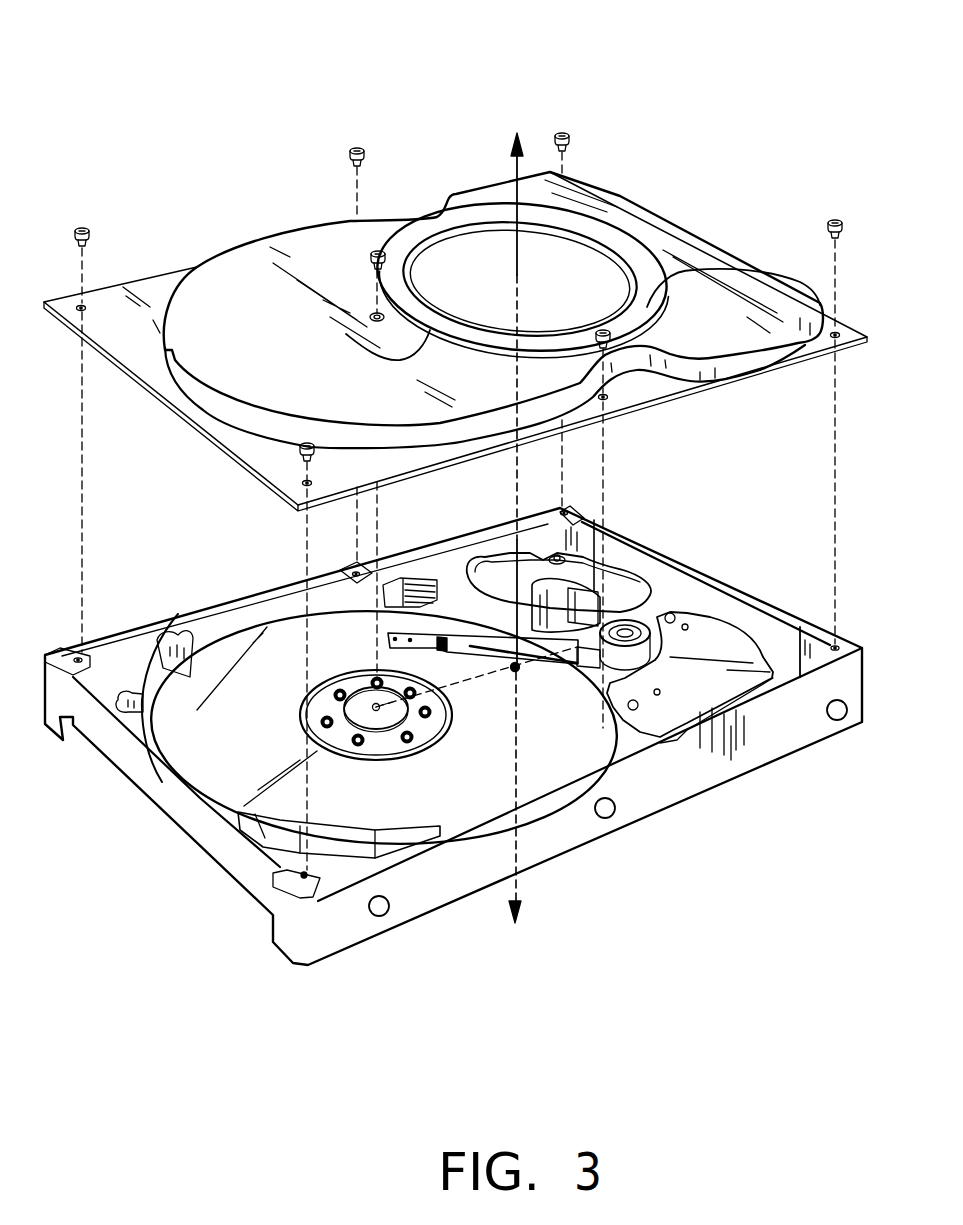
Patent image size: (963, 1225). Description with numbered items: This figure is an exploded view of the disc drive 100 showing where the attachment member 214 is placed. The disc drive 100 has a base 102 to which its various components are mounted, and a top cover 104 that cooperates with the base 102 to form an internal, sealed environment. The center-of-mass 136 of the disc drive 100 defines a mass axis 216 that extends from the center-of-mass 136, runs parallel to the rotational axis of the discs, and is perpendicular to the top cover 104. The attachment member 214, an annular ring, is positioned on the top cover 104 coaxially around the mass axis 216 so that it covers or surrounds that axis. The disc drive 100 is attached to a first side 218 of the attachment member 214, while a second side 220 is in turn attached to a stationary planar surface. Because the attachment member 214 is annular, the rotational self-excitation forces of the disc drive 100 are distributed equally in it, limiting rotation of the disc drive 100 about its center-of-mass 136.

The disc drive 100 is at (736, 102).
The base 102 is at (660, 608).
The top cover 104 is at (160, 295).
The center-of-mass 136 is at (520, 670).
The attachment member 214 is at (605, 236).
The mass axis 216 is at (514, 168).
The first side 218 is at (373, 350).
The second side 220 is at (650, 292).